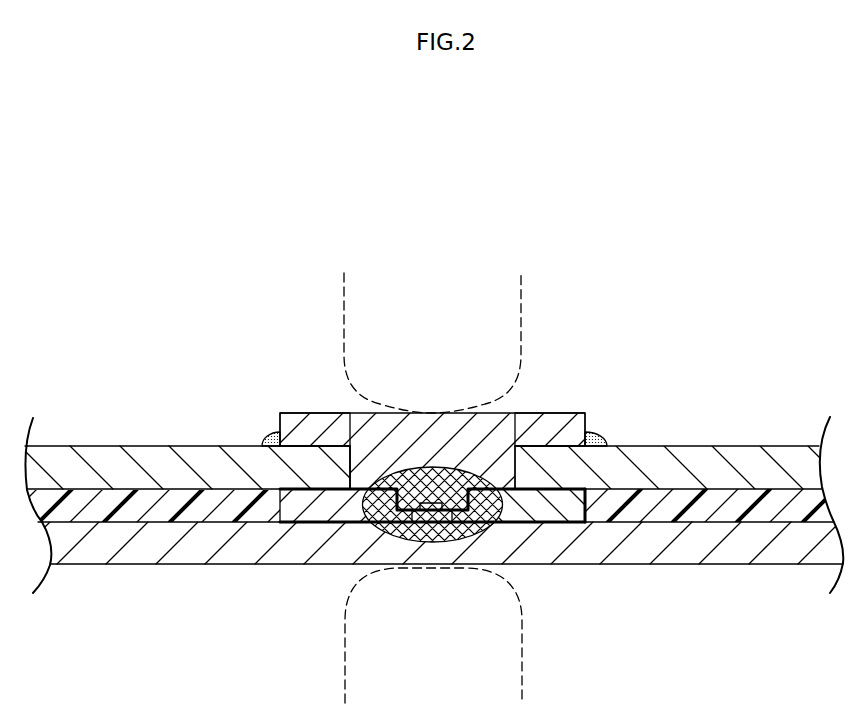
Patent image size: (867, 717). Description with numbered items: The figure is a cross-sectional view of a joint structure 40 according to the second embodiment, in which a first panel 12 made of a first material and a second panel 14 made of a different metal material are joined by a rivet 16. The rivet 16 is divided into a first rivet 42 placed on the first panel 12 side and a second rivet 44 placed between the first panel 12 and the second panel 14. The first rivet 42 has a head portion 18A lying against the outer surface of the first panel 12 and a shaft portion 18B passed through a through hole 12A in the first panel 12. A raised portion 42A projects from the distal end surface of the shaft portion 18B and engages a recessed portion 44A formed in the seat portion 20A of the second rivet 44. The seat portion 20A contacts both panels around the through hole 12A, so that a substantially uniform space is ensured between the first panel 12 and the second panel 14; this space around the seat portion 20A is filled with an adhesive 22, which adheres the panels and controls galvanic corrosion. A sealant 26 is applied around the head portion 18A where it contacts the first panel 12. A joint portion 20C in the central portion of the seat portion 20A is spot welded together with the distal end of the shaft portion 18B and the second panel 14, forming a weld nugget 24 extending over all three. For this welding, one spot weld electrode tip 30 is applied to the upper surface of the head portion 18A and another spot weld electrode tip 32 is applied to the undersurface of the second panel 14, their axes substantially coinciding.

The first panel 12 is at (752, 446).
The through hole 12A is at (353, 465).
The second panel 14 is at (717, 566).
The rivet 16 is at (543, 382).
The head portion 18A is at (320, 423).
The shaft portion 18B is at (508, 468).
The seat portion 20A is at (310, 510).
The joint portion 20C is at (427, 514).
The adhesive 22 is at (147, 502).
The weld nugget 24 is at (470, 537).
The sealant 26 is at (267, 437).
The spot weld electrode tip 30 is at (521, 292).
The spot weld electrode tip 32 is at (522, 692).
The joint structure 40 is at (667, 355).
The first rivet 42 is at (568, 412).
The raised portion 42A is at (446, 518).
The second rivet 44 is at (540, 504).
The recessed portion 44A is at (414, 518).